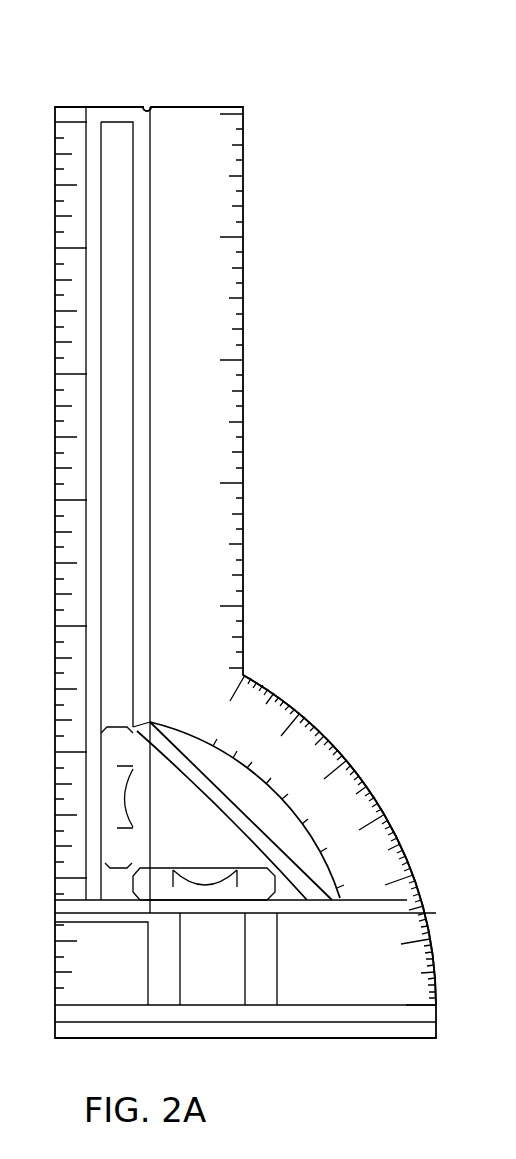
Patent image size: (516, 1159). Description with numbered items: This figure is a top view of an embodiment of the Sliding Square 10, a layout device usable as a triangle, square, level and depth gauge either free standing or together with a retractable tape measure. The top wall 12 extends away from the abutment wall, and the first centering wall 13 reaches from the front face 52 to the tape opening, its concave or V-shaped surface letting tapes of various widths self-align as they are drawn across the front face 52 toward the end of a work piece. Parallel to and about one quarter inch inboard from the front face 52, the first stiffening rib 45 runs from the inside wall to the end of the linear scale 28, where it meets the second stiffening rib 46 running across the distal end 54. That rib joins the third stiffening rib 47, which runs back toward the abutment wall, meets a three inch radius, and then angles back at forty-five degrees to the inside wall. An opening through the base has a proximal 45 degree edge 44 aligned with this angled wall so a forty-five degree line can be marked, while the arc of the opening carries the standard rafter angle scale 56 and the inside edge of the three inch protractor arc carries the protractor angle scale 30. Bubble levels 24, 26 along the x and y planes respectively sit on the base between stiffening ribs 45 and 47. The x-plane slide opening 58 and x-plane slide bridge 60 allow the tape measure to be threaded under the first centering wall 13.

The Sliding Square 10 is at (280, 490).
The top wall 12 is at (323, 965).
The first centering wall 13 is at (110, 965).
The bubble level 24 is at (277, 885).
The bubble level 26 is at (130, 722).
The linear scale 28 is at (237, 410).
The protractor angle scale 30 is at (352, 758).
The proximal 45 degree edge 44 is at (188, 755).
The first stiffening rib 45 is at (95, 208).
The second stiffening rib 46 is at (88, 113).
The third stiffening rib 47 is at (136, 336).
The front face 52 is at (55, 145).
The distal end 54 is at (125, 107).
The standard rafter angle scale 56 is at (285, 745).
The x-plane slide opening 58 is at (162, 985).
The x-plane slide bridge 60 is at (213, 967).